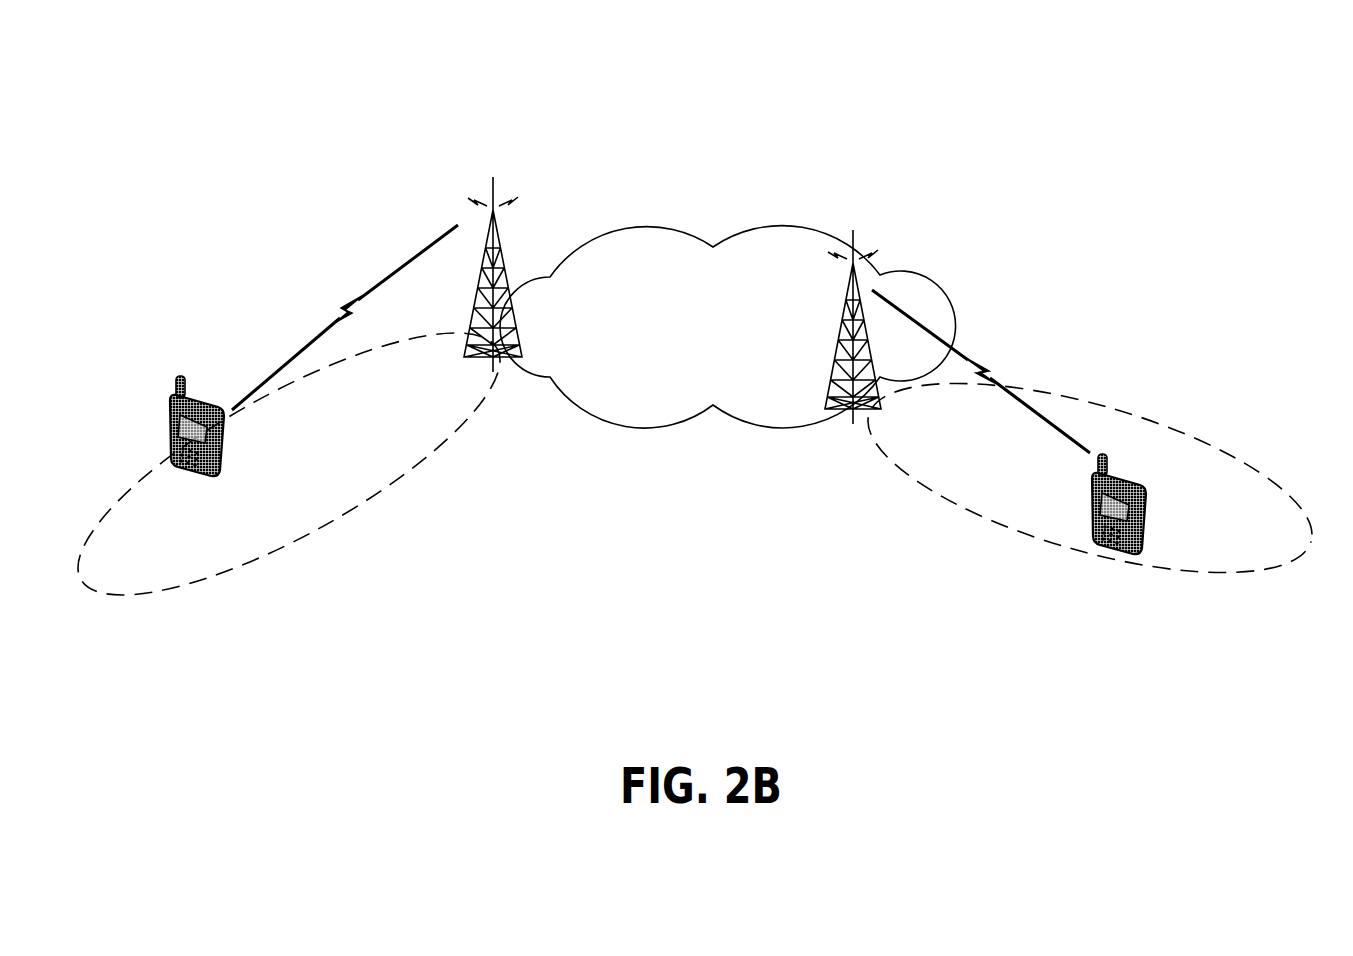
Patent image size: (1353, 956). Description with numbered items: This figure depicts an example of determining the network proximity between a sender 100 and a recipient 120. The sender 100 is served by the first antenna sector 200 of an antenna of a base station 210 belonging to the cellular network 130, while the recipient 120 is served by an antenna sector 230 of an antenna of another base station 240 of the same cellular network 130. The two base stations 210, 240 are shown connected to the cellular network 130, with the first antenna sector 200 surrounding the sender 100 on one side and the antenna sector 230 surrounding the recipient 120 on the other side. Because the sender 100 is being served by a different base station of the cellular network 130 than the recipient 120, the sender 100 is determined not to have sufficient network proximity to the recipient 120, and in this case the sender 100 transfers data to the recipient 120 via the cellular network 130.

The sender 100 is at (198, 392).
The recipient 120 is at (1136, 483).
The cellular network 130 is at (638, 227).
The first antenna sector 200 is at (137, 597).
The base station 210 is at (473, 180).
The antenna sector 230 is at (1240, 572).
The another base station 240 is at (882, 243).